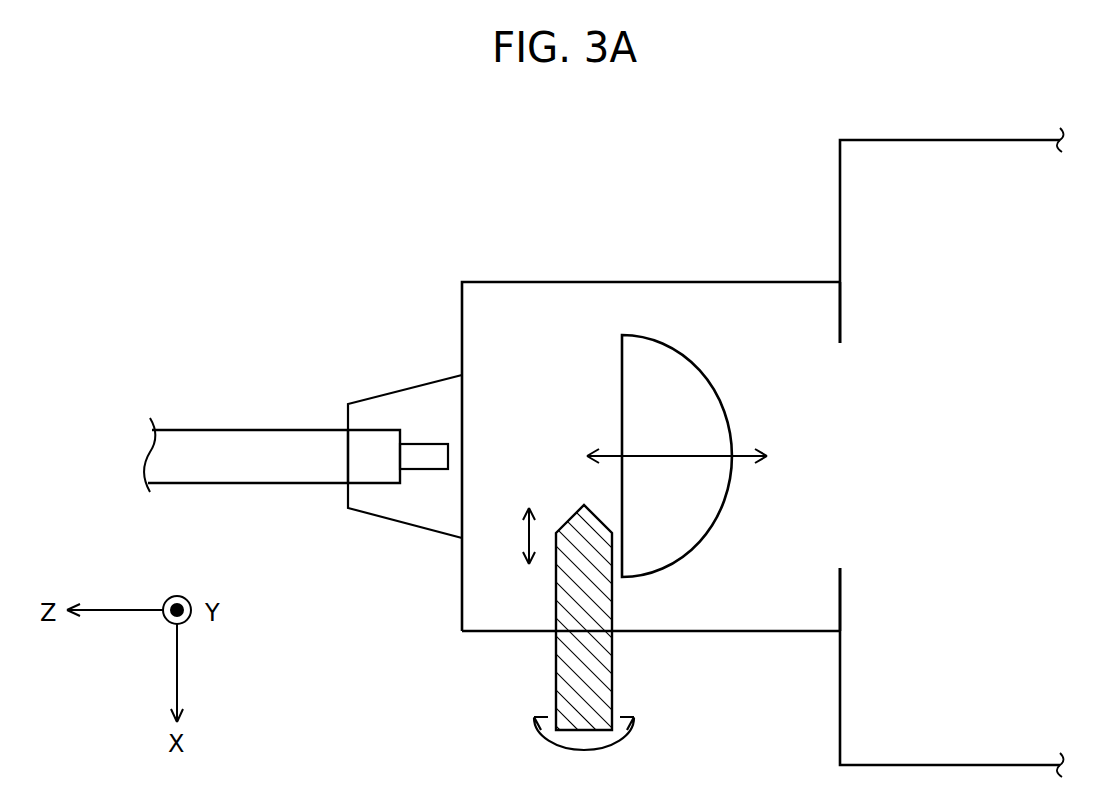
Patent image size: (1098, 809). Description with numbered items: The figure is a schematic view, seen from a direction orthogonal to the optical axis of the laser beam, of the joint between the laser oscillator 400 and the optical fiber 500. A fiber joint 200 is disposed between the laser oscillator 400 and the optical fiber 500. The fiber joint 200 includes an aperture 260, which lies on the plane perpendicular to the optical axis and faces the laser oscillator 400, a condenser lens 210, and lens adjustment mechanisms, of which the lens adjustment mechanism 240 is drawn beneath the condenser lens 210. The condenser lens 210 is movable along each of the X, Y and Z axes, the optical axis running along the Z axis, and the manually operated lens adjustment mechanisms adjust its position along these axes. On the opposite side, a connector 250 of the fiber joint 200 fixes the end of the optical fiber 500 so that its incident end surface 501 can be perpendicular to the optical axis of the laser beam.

The fiber joint 200 is at (653, 236).
The laser oscillator 400 is at (840, 182).
The aperture 260 is at (822, 453).
The connector 250 is at (438, 397).
The optical fiber 500 is at (278, 430).
The incident end surface 501 is at (453, 463).
The condenser lens 210 is at (622, 350).
The lens adjustment mechanism 240 is at (556, 661).